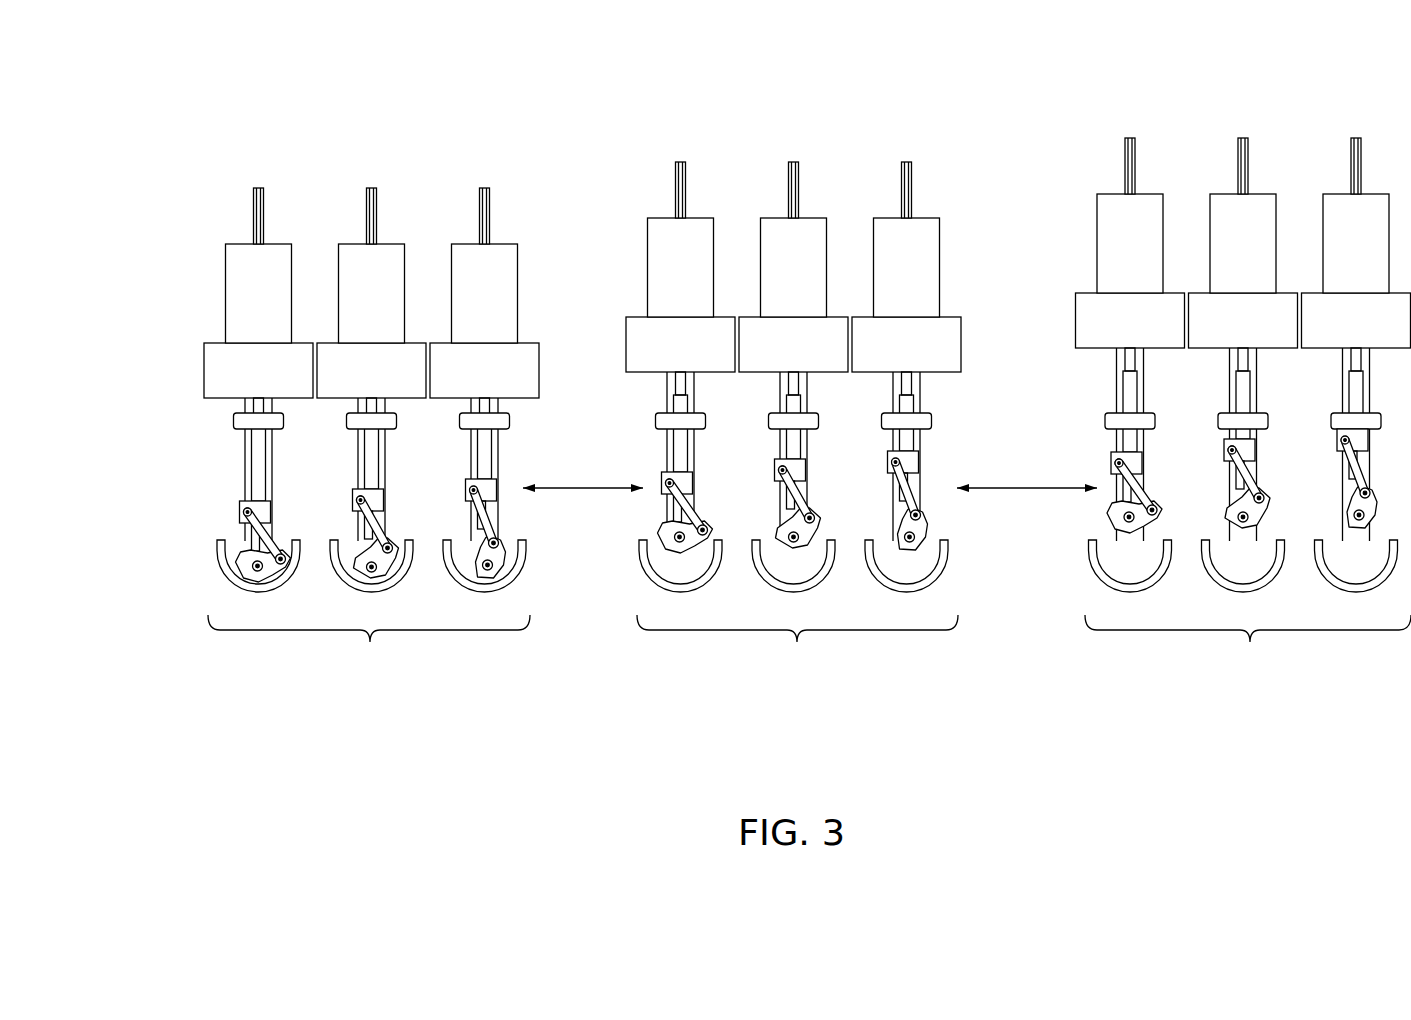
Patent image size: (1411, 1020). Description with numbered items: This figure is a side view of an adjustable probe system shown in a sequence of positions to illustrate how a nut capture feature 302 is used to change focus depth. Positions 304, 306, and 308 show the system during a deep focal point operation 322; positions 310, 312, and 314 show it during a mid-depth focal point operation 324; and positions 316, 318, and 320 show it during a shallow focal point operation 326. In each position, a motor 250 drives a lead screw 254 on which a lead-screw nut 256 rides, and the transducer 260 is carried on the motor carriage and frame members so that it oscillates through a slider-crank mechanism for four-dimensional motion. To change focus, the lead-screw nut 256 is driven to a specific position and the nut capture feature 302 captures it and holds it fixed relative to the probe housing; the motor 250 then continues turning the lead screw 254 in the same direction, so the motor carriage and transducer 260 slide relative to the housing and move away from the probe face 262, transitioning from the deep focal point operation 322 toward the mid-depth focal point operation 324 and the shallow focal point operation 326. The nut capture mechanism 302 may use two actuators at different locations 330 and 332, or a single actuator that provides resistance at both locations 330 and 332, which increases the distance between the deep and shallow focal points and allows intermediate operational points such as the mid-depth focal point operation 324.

The motor 250 is at (225, 285).
The lead screw 254 is at (248, 482).
The lead-screw nut 256 is at (235, 510).
The transducer 260 is at (262, 588).
The probe face 262 is at (228, 578).
The nut capture feature 302 is at (585, 490).
The position 304 is at (437, 366).
The position 306 is at (378, 168).
The position 308 is at (472, 346).
The position 310 is at (688, 140).
The position 312 is at (800, 140).
The position 314 is at (895, 332).
The position 316 is at (1138, 118).
The position 318 is at (1250, 118).
The position 320 is at (1365, 118).
The deep focal point operation 322 is at (437, 417).
The mid-depth focal point operation 324 is at (793, 403).
The shallow focal point operation 326 is at (1244, 393).
The location 330 is at (460, 487).
The location 332 is at (883, 458).